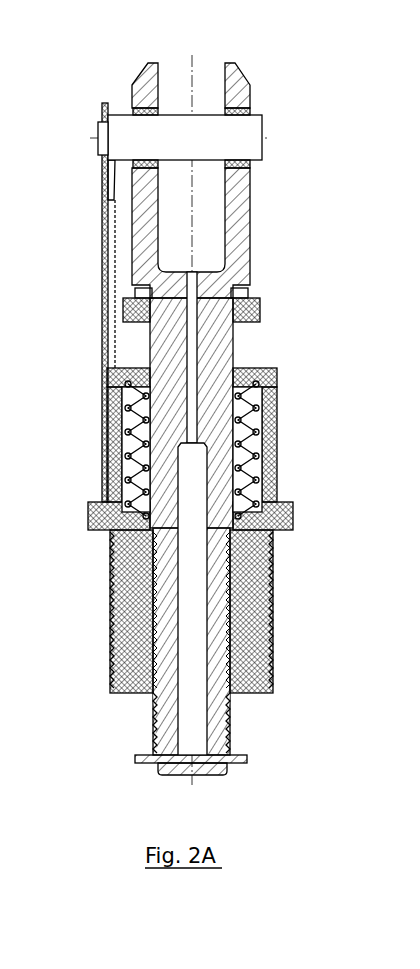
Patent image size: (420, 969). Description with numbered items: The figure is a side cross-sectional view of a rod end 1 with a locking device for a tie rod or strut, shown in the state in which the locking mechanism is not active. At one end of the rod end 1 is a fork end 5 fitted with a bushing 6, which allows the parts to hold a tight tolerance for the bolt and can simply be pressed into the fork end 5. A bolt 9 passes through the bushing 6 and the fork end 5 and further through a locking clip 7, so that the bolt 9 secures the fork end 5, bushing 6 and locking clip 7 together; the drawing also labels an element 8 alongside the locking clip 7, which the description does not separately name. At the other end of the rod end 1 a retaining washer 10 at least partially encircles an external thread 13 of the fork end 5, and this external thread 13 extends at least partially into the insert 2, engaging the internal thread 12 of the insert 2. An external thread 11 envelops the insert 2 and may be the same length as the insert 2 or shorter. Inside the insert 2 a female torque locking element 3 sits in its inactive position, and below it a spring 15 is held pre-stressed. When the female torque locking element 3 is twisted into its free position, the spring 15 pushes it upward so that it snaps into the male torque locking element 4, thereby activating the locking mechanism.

The rod end 1 is at (205, 420).
The insert 2 is at (253, 637).
The female torque locking element 3 is at (272, 377).
The male torque locking element 4 is at (253, 308).
The fork end 5 is at (147, 265).
The bushing 6 is at (225, 110).
The locking clip 7 is at (65, 302).
The bracket 8 is at (103, 277).
The bolt 9 is at (167, 152).
The retaining washer 10 is at (147, 758).
The external thread 11 is at (273, 655).
The internal thread 12 is at (250, 513).
The external thread 13 is at (228, 637).
The spring 15 is at (233, 475).